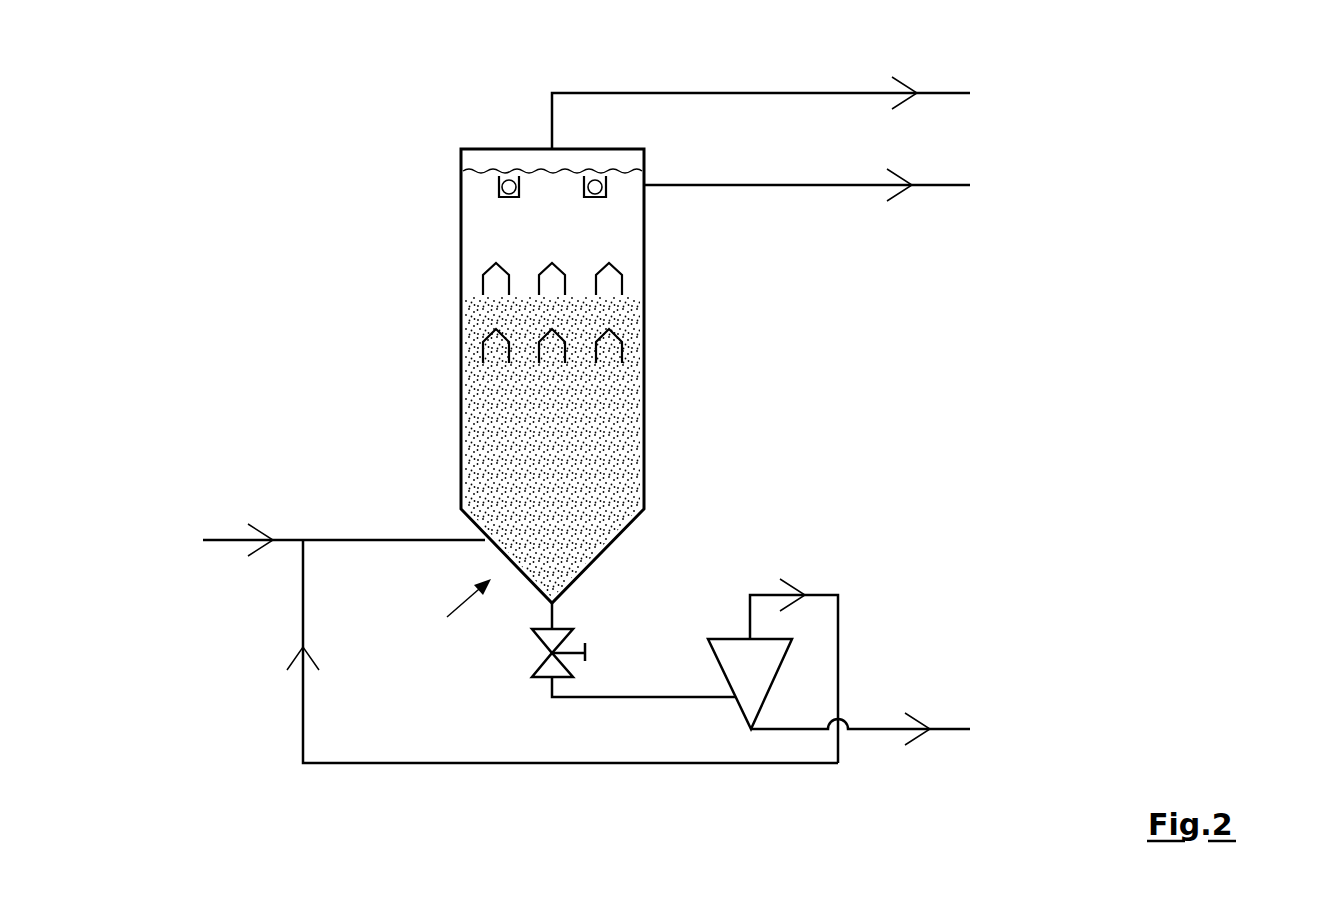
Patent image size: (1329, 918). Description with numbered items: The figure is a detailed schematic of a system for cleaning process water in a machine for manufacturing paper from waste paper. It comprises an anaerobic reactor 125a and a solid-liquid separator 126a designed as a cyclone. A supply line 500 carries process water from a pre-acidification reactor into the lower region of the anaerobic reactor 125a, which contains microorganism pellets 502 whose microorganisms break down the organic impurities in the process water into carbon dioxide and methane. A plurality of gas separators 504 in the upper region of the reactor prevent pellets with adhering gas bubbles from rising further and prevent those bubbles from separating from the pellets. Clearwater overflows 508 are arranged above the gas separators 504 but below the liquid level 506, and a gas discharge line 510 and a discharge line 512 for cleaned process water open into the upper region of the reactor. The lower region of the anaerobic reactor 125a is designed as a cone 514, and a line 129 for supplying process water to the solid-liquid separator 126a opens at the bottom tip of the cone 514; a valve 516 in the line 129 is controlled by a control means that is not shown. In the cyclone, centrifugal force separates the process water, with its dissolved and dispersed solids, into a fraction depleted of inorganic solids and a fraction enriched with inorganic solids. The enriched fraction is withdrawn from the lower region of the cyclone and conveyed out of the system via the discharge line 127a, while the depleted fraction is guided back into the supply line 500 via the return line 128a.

The anaerobic reactor 125a is at (645, 368).
The microorganism pellets 502 is at (622, 460).
The gas separators 504 is at (622, 280).
The liquid level 506 is at (471, 170).
The clearwater overflows 508 is at (498, 190).
The gas discharge line 510 is at (796, 92).
The discharge line for cleaned process water 512 is at (813, 186).
The supply line 500 is at (223, 538).
The cone 514 is at (451, 614).
The valve 516 is at (537, 665).
The line 129 is at (664, 697).
The solid-liquid separator 126a is at (722, 638).
The discharge line 127a is at (882, 727).
The return line 128a is at (594, 765).